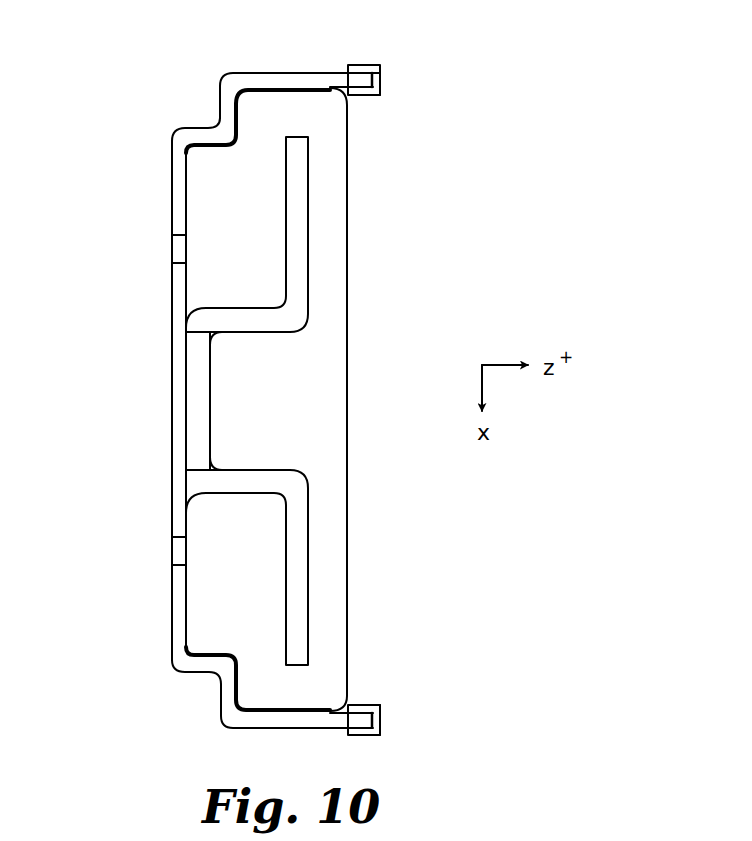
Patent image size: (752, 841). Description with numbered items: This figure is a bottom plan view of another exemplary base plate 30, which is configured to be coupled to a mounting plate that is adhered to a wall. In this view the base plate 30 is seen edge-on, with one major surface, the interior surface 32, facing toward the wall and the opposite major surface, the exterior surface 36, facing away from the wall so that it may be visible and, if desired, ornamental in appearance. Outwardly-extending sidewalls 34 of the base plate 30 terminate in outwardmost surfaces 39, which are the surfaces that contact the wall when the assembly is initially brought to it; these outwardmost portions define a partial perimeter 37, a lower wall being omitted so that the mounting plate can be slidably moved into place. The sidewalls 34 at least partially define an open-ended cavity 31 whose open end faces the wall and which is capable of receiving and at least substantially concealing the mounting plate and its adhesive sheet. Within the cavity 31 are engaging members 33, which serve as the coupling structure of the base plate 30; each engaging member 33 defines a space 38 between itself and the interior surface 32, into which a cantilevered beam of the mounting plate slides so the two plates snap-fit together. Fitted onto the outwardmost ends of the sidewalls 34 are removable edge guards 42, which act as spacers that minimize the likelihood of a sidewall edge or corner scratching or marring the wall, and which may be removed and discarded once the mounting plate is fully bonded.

The base plate 30 is at (254, 377).
The open-ended cavity 31 is at (282, 414).
The interior surface 32 is at (186, 198).
The engaging members 33 is at (297, 277).
The sidewalls 34 is at (309, 79).
The exterior surface 36 is at (171, 585).
The partial perimeter 37 is at (382, 720).
The space 38 is at (224, 529).
The outwardmost surfaces 39 is at (382, 80).
The edge guards 42 is at (375, 69).